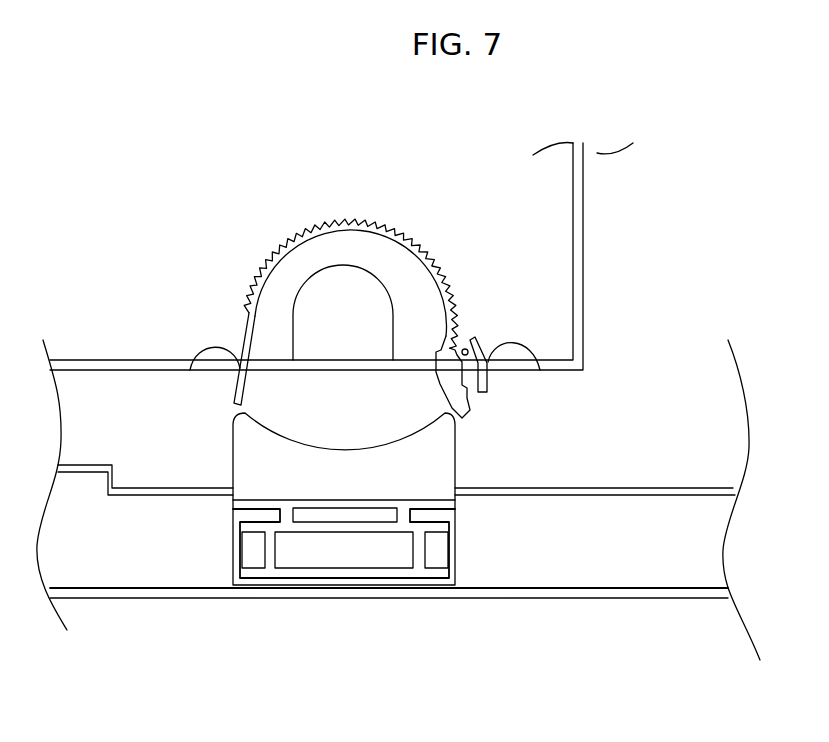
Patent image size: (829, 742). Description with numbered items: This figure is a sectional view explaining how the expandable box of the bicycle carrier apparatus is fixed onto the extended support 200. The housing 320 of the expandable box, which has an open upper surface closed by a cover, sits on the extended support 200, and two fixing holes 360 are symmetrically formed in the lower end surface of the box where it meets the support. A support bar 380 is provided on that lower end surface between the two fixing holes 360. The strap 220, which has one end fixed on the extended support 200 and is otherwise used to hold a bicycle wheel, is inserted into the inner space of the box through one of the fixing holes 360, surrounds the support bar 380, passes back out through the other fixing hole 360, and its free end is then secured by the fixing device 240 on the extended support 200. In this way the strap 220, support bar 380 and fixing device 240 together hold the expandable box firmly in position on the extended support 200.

The extended support 200 is at (348, 485).
The strap 220 is at (267, 277).
The fixing device 240 is at (473, 402).
The housing 320 is at (583, 258).
The fixing holes 360 is at (190, 370).
The support bar 380 is at (328, 312).